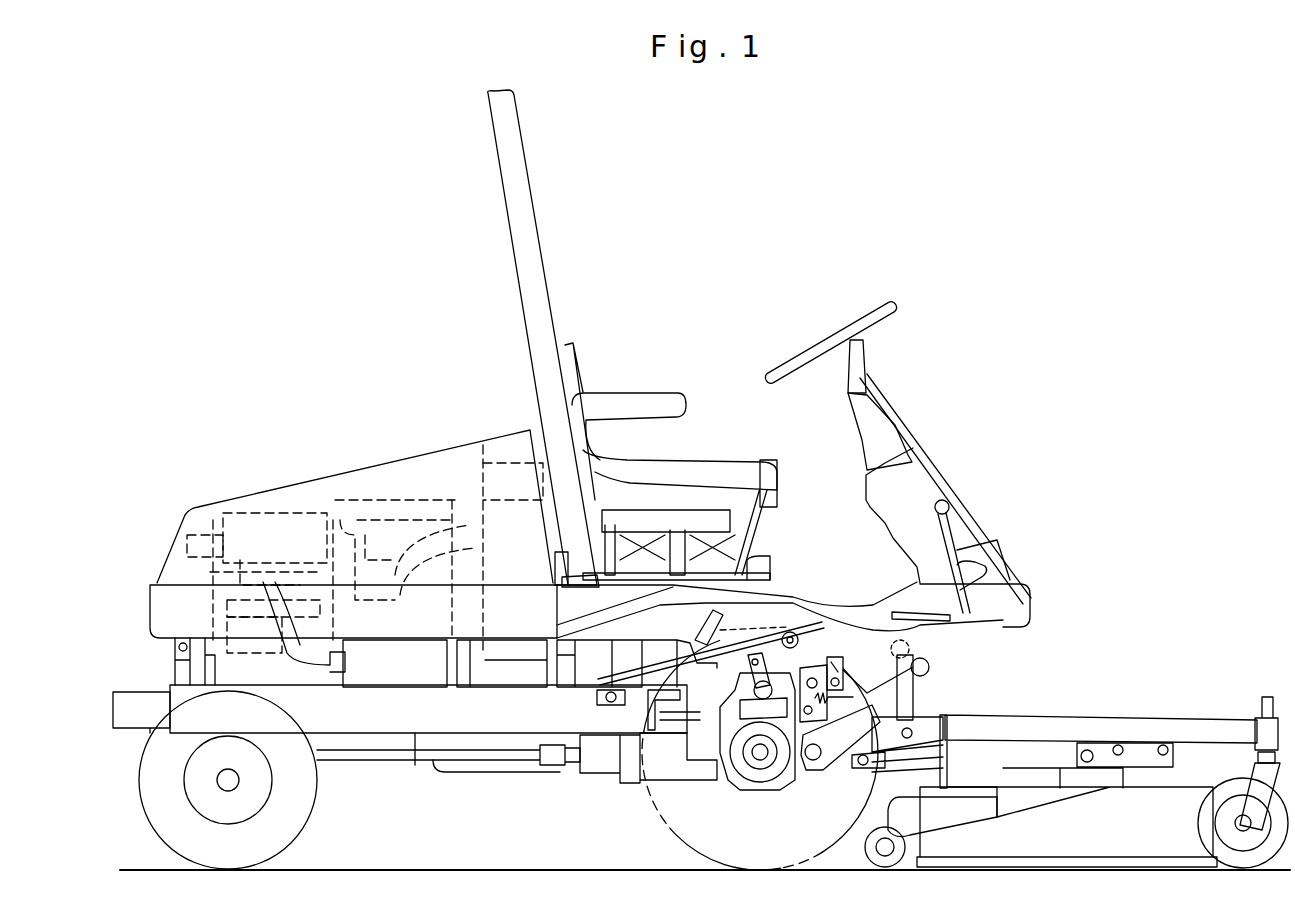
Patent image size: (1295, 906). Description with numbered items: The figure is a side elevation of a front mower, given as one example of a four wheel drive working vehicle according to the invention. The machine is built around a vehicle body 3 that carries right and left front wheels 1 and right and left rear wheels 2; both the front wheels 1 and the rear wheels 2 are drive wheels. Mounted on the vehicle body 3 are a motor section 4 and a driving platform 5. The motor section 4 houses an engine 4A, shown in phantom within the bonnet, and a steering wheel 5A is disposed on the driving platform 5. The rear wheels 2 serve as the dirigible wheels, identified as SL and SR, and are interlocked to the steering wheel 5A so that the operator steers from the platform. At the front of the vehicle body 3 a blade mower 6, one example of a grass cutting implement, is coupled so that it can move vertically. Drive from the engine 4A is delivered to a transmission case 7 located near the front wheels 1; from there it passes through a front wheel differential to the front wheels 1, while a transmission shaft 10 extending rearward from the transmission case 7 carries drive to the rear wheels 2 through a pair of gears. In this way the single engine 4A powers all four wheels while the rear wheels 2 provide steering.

The front wheel 1 is at (680, 832).
The rear wheel 2 is at (310, 800).
The vehicle body 3 is at (480, 725).
The motor section 4 is at (350, 458).
The engine 4A is at (215, 566).
The driving platform 5 is at (705, 340).
The steering wheel 5A is at (842, 308).
The blade mower 6 is at (1175, 705).
The transmission case 7 is at (760, 790).
The transmission shaft 10 is at (372, 758).